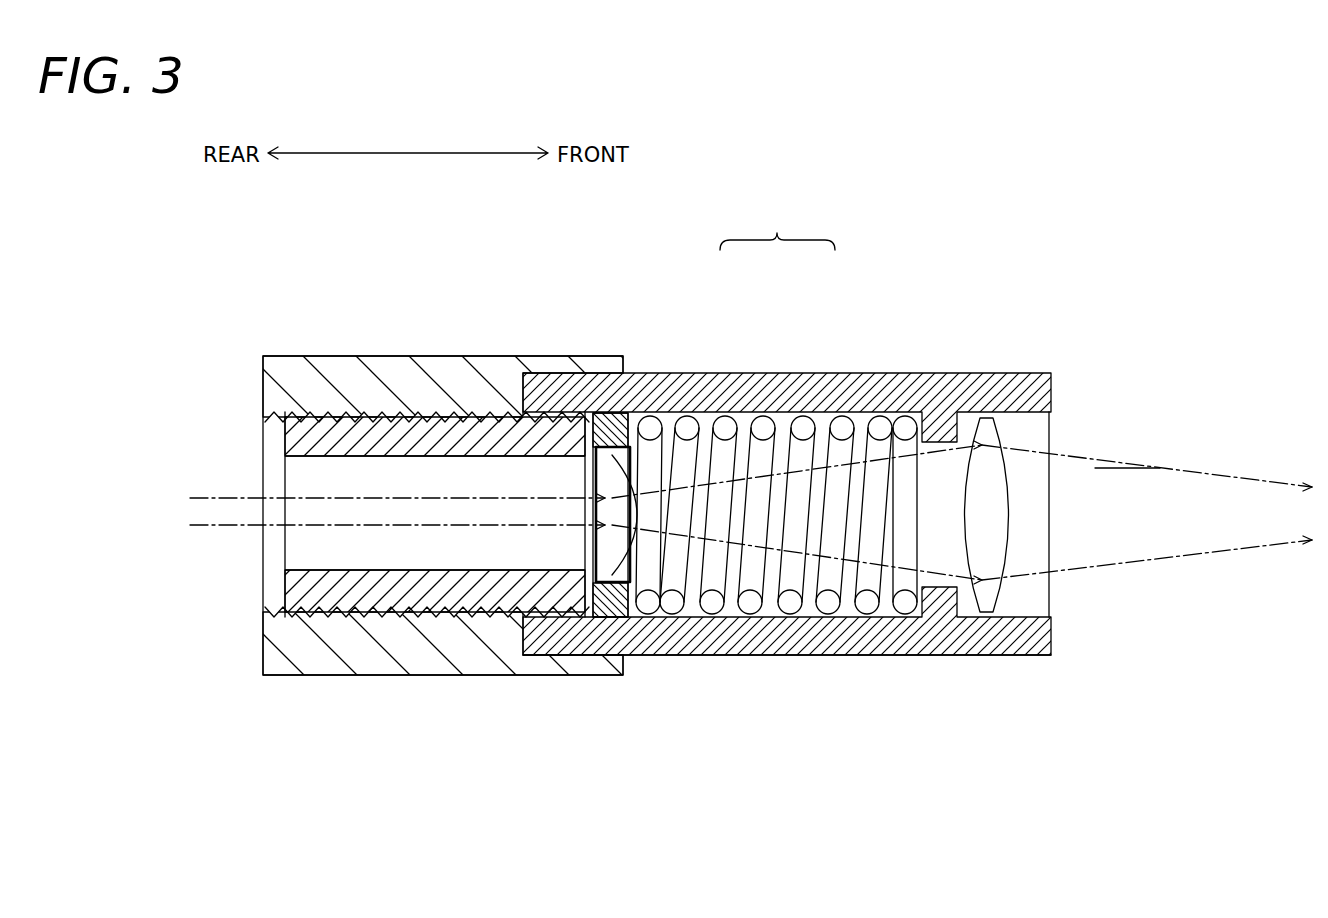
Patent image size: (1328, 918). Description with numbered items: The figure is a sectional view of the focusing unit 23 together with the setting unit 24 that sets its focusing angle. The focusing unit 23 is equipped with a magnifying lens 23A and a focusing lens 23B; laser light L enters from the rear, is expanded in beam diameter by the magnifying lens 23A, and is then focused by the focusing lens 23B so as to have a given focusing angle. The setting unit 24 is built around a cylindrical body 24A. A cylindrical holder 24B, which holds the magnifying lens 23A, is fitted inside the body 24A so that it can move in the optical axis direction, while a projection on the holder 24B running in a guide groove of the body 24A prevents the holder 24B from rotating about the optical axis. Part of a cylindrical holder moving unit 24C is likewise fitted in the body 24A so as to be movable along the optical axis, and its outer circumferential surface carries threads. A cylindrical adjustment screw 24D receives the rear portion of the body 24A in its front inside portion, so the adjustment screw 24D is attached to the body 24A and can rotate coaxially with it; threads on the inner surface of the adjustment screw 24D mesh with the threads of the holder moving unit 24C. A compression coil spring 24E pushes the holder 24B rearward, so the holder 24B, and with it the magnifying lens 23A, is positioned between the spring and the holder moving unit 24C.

The setting unit 24 is at (718, 660).
The body 24A is at (1020, 375).
The holder 24B is at (612, 425).
The holder moving unit 24C is at (383, 428).
The adjustment screw 24D is at (300, 357).
The compression coil spring 24E is at (828, 603).
The focusing unit 23 is at (777, 233).
The magnifying lens 23A is at (612, 460).
The focusing lens 23B is at (985, 432).
The laser light L is at (216, 498).